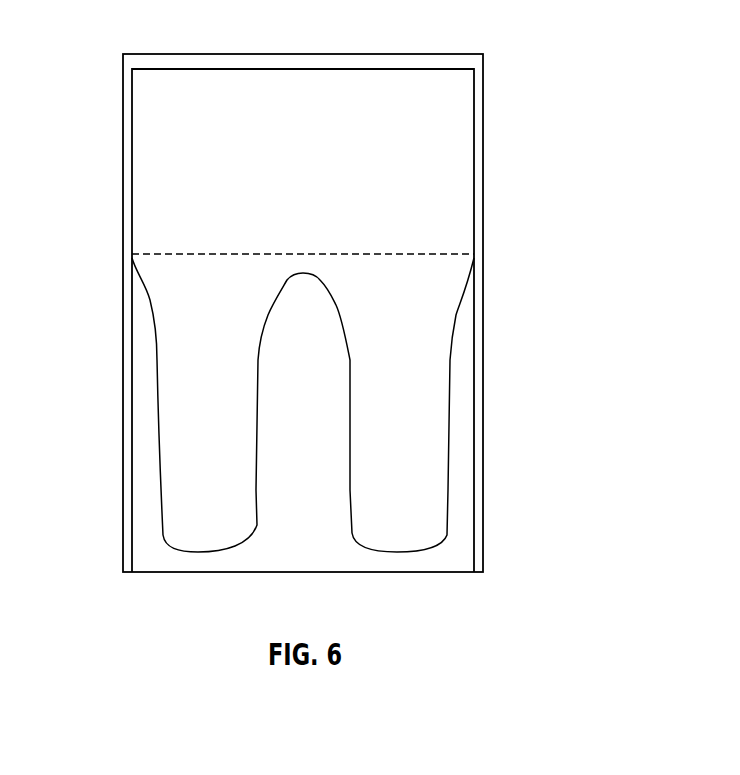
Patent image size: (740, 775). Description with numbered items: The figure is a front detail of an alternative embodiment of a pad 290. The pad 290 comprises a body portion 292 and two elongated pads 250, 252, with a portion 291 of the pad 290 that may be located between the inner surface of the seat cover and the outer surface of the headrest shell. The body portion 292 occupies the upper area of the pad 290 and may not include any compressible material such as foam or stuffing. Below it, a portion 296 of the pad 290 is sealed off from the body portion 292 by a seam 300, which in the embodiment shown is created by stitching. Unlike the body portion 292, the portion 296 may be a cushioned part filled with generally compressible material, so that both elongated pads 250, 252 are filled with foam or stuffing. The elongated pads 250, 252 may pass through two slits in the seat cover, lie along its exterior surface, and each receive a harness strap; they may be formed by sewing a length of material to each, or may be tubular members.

The pad 290 is at (540, 592).
The portion of the pad 291 is at (457, 137).
The body portion 292 is at (322, 196).
The seam 300 is at (403, 253).
The elongated pad 250 is at (177, 419).
The elongated pad 252 is at (430, 419).
The portion of the pad 296 is at (418, 340).